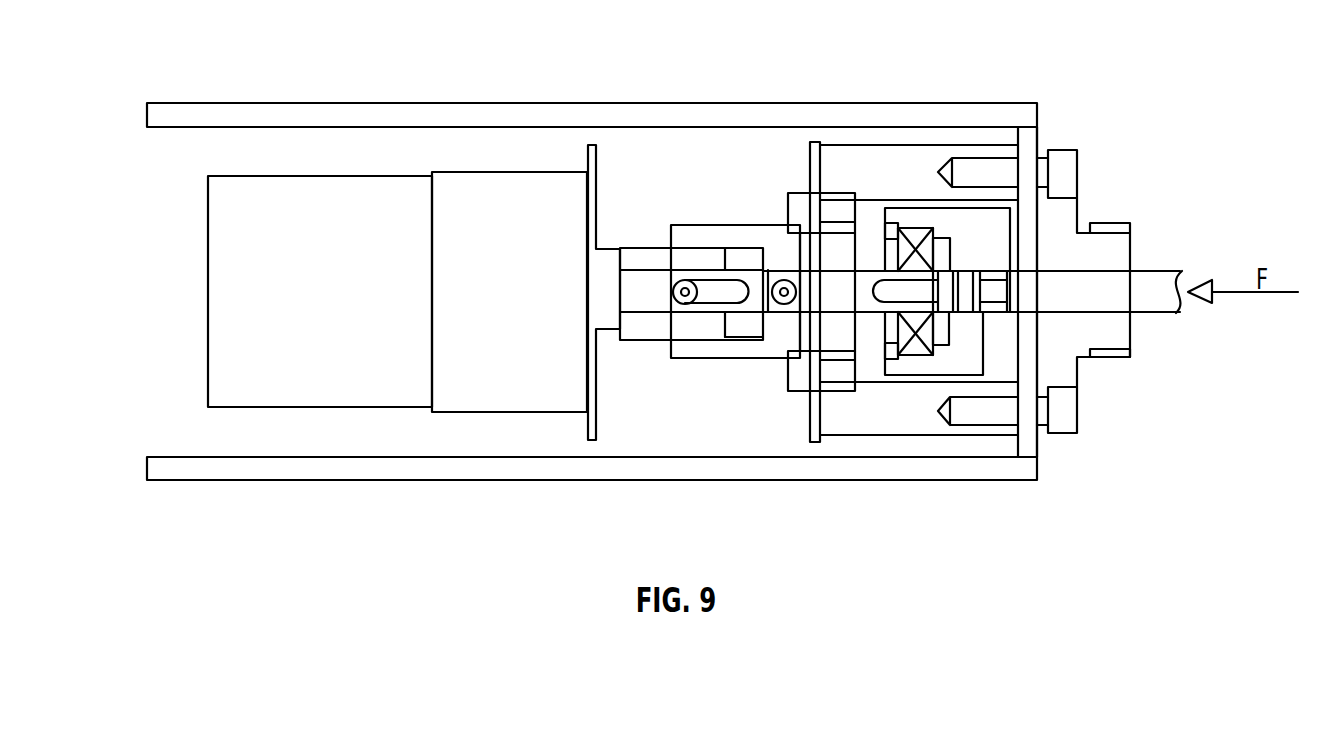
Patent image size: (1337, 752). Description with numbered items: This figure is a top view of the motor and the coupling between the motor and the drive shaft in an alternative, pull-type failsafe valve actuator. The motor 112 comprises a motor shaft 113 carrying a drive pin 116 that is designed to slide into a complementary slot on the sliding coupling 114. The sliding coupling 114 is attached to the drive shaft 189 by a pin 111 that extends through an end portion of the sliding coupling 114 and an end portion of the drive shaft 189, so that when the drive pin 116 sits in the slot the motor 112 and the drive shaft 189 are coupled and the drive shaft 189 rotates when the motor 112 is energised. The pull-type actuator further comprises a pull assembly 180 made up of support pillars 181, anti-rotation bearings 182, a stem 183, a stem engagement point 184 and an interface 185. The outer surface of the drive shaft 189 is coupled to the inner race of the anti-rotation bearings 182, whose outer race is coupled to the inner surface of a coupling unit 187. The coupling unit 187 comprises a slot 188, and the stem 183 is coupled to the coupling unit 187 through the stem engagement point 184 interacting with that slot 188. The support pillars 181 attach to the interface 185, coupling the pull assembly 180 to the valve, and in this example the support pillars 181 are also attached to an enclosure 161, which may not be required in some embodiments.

The pin 111 is at (784, 304).
The motor 112 is at (215, 233).
The motor shaft 113 is at (603, 268).
The sliding coupling 114 is at (715, 238).
The drive pin 116 is at (686, 304).
The enclosure 161 is at (345, 458).
The pull assembly 180 is at (964, 517).
The support pillars 181 is at (915, 167).
The anti-rotation bearings 182 is at (918, 347).
The stem 183 is at (1160, 278).
The stem engagement point 184 is at (985, 313).
The interface 185 is at (1115, 230).
The coupling unit 187 is at (988, 223).
The slot 188 is at (992, 362).
The drive shaft 189 is at (851, 283).